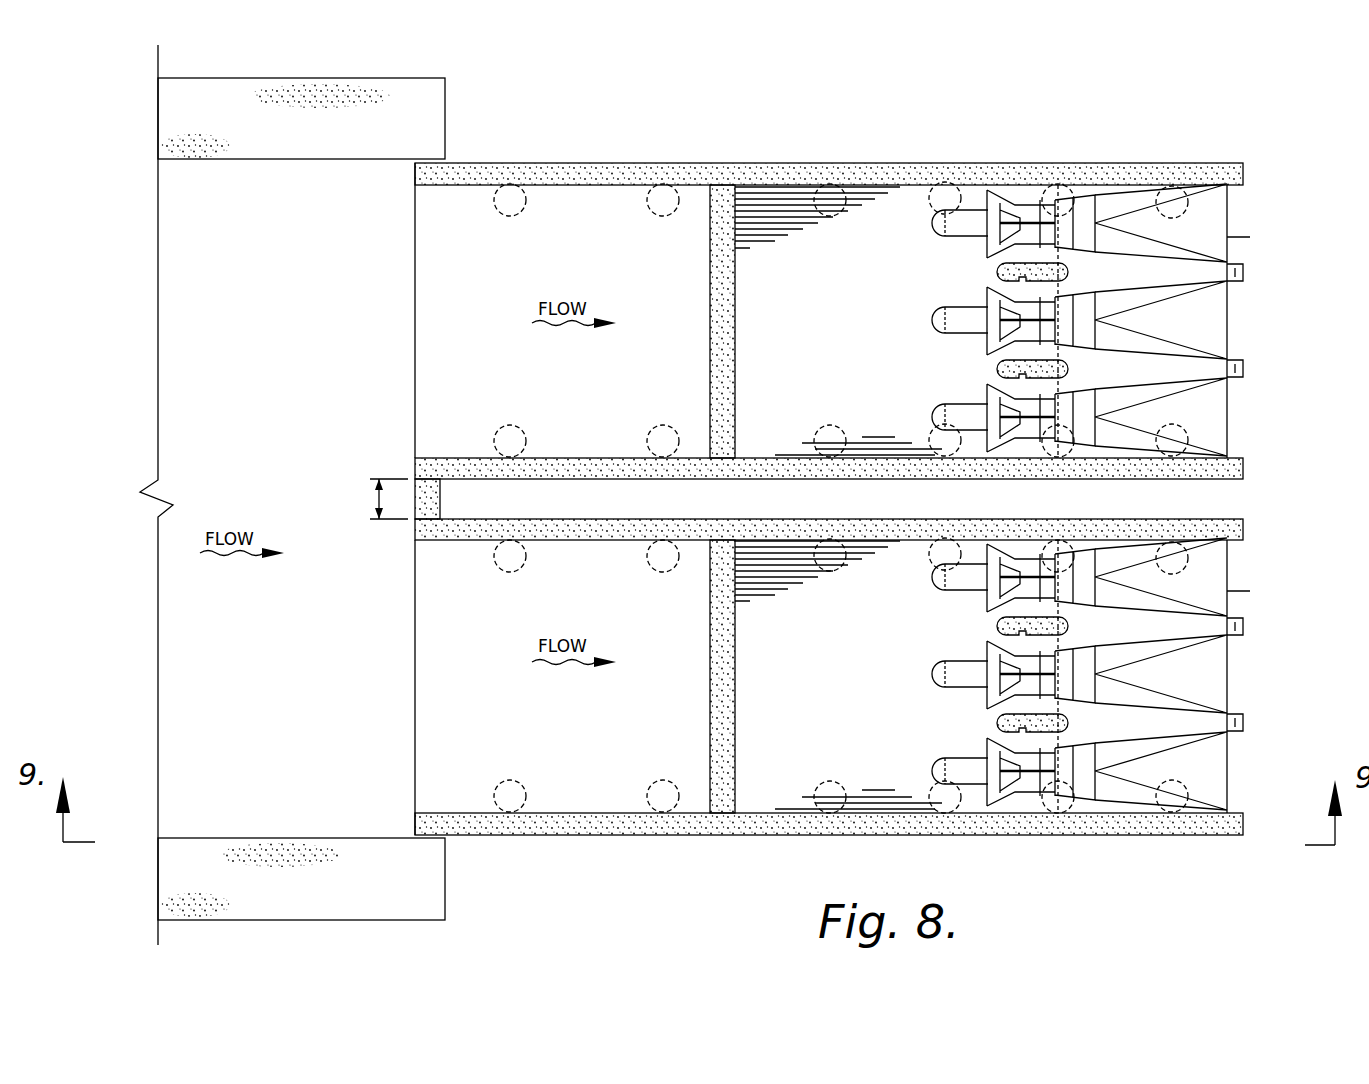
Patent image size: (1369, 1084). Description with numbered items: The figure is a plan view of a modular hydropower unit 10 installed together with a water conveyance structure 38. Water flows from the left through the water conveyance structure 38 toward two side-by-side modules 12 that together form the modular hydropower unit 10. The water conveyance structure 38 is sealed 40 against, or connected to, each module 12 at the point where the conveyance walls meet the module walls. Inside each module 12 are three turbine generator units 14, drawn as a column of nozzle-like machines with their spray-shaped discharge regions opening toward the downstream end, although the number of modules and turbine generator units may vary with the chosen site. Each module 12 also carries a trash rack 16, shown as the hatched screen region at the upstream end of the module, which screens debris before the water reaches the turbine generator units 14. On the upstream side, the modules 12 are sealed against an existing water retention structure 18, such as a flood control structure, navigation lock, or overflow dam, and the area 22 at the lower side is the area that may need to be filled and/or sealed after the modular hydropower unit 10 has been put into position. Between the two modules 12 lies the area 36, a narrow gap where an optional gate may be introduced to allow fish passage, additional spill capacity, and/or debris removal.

The modular hydropower unit 10 is at (1268, 187).
The module 12 is at (1227, 237).
The turbine generator unit 14 is at (940, 305).
The trash rack 16 is at (760, 245).
The water retention structure 18 is at (445, 78).
The area 22 is at (415, 825).
The area 36 is at (378, 500).
The water conveyance structure 38 is at (415, 325).
The seal 40 is at (703, 163).